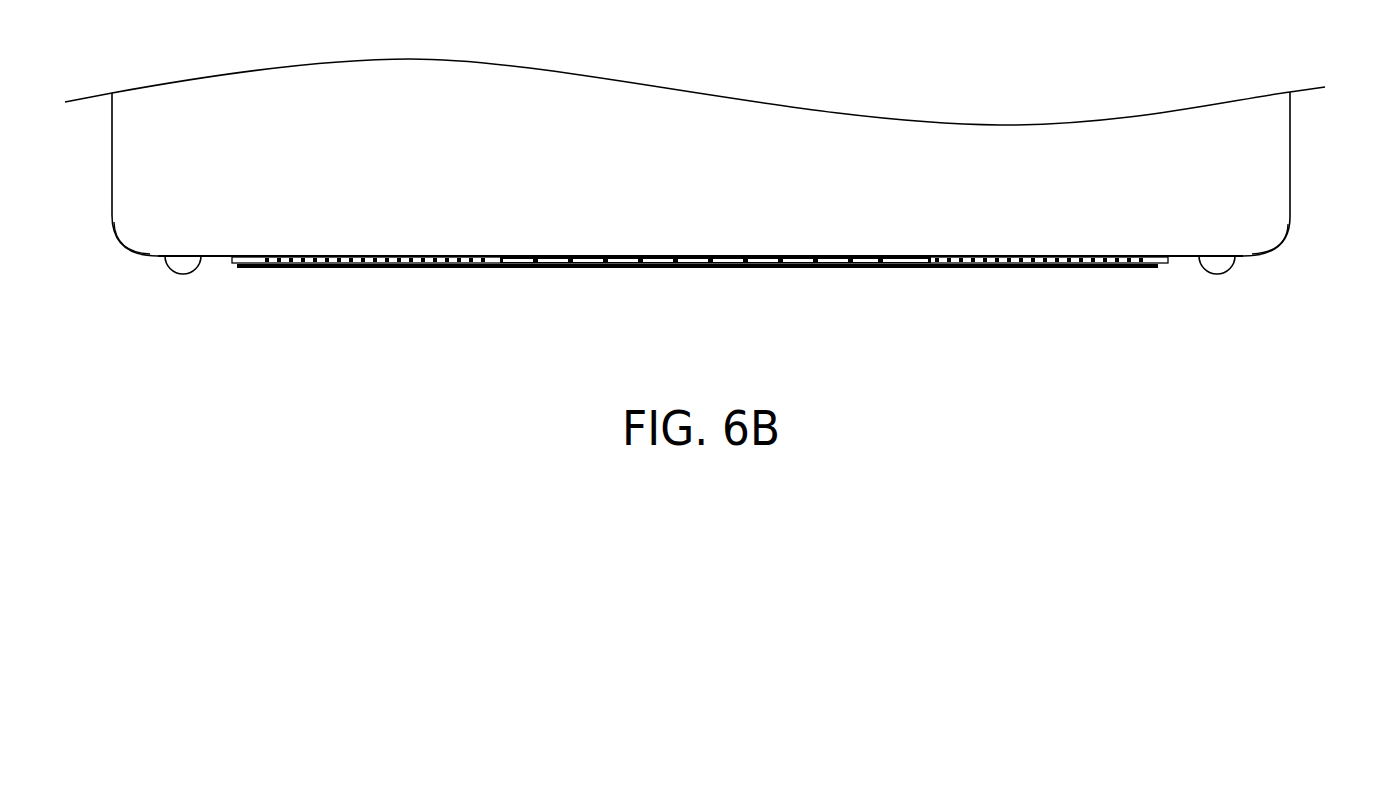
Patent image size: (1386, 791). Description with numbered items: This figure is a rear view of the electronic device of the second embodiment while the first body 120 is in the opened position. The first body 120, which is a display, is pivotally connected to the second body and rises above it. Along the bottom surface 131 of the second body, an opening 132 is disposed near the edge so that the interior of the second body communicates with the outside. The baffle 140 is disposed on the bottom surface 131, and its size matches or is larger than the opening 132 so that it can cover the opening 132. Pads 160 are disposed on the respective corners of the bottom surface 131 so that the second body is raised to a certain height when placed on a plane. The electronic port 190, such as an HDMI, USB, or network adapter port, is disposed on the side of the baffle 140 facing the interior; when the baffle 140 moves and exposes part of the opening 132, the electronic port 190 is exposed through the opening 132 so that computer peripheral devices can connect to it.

The first body 120 is at (1270, 142).
The bottom surface 131 is at (1185, 268).
The opening 132 is at (495, 278).
The baffle 140 is at (258, 263).
The pads 160 is at (180, 263).
The electronic port 190 is at (660, 263).